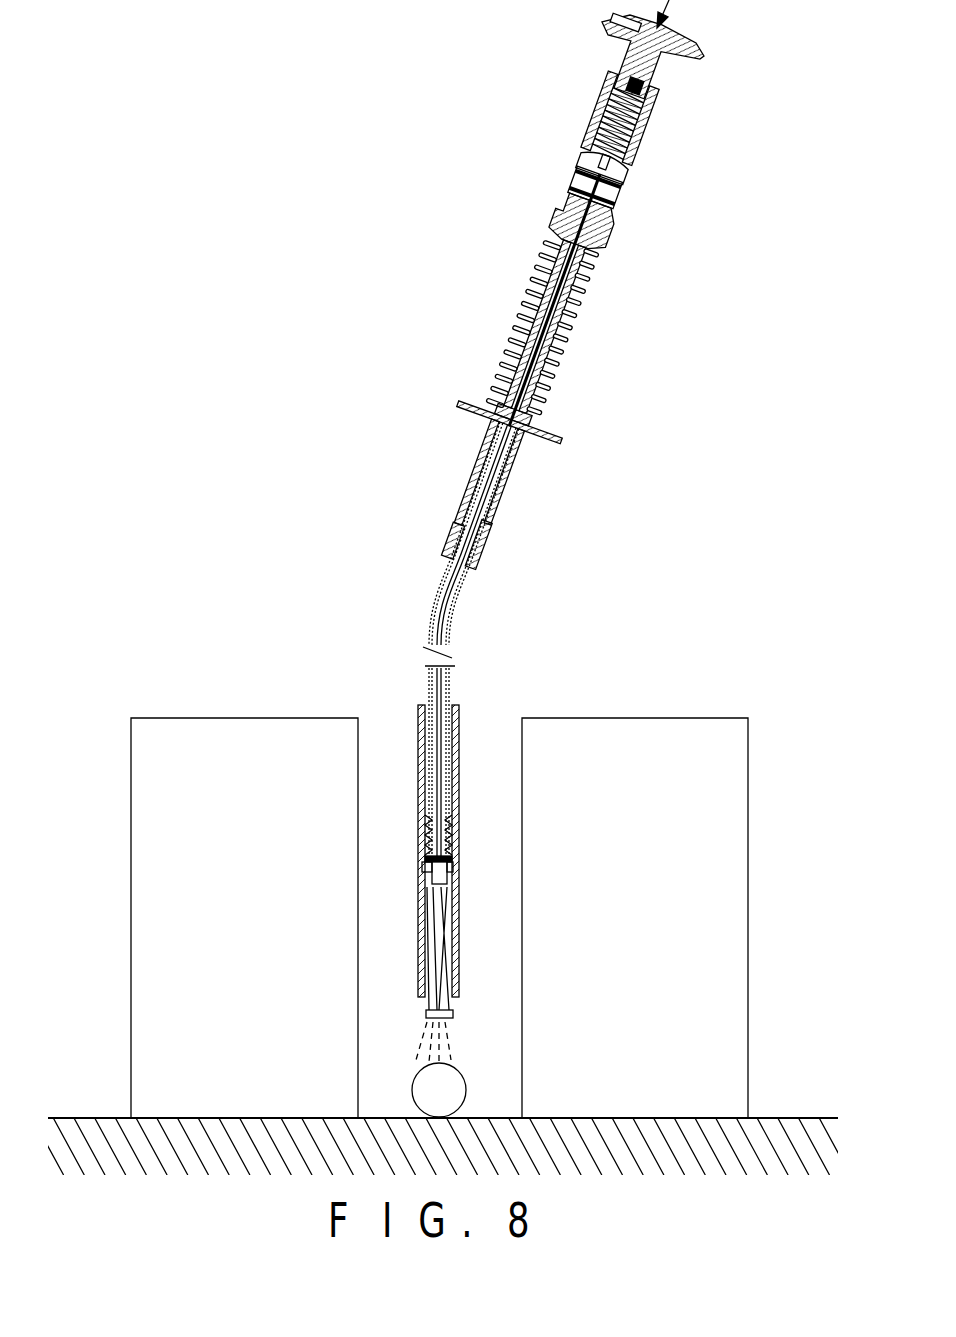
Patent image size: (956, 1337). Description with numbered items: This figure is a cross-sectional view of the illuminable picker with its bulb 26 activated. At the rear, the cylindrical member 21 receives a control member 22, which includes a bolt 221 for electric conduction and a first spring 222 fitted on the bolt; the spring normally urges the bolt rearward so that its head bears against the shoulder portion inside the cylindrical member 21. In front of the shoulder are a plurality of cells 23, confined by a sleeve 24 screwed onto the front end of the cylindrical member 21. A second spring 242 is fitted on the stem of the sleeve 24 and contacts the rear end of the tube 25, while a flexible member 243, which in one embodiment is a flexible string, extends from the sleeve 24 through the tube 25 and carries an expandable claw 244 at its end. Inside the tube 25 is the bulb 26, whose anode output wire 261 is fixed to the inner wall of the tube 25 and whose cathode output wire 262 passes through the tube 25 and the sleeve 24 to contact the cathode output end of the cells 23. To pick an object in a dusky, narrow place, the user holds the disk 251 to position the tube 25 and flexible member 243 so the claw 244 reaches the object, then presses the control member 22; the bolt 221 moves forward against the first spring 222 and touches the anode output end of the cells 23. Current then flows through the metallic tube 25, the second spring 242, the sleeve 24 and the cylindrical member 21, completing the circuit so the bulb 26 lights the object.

The cylindrical member 21 is at (660, 128).
The control member 22 is at (705, 57).
The bolt 221 is at (622, 168).
The first spring 222 is at (615, 107).
The cells 23 is at (618, 200).
The sleeve 24 is at (606, 237).
The second spring 242 is at (572, 318).
The flexible member 243 is at (442, 776).
The expandable claw 244 is at (455, 1013).
The tube 25 is at (455, 606).
The disk 251 is at (553, 445).
The bulb 26 is at (430, 872).
The anode output wire 261 is at (424, 859).
The cathode output wire 262 is at (453, 863).